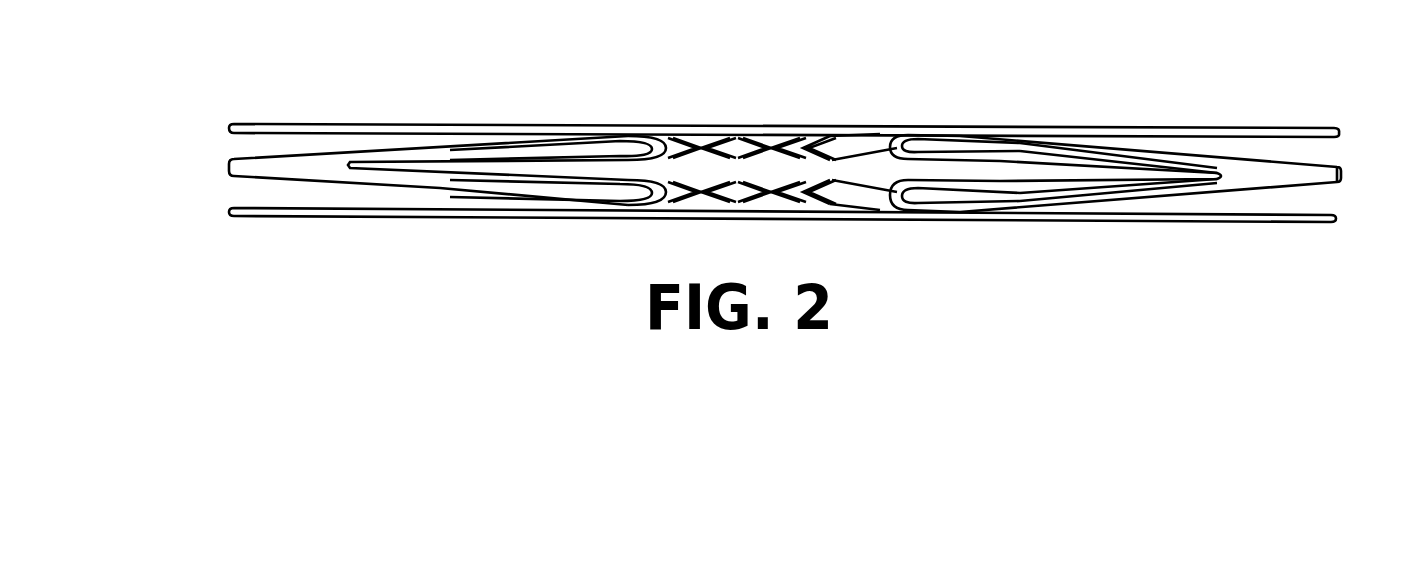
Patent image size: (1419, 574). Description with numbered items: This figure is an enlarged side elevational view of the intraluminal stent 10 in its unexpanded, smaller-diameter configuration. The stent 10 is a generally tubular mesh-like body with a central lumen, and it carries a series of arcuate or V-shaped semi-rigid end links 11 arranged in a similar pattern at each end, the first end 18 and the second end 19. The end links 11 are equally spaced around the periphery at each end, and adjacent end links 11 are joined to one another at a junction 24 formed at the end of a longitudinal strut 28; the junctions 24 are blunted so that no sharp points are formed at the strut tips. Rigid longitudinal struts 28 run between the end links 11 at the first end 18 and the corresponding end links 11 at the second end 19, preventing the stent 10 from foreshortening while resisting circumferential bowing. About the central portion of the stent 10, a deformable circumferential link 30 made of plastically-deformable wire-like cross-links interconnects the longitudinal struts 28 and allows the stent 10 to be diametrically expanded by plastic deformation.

The intraluminal stent 10 is at (772, 153).
The end link 11 is at (641, 124).
The first end 18 is at (224, 187).
The second end 19 is at (1333, 197).
The junction 24 is at (1308, 176).
The longitudinal strut 28 is at (880, 170).
The circumferential link 30 is at (688, 124).